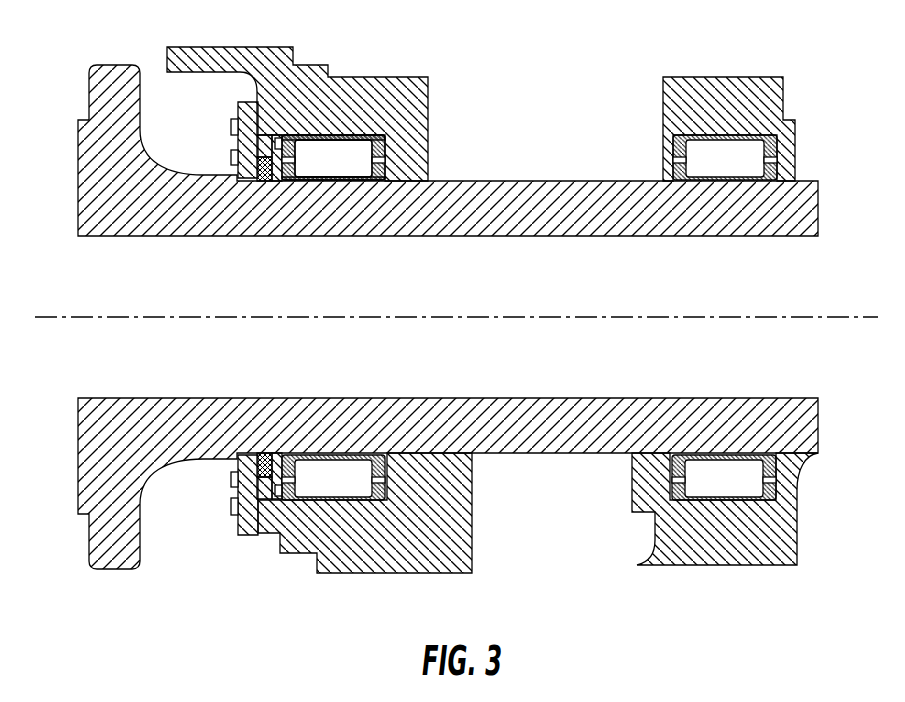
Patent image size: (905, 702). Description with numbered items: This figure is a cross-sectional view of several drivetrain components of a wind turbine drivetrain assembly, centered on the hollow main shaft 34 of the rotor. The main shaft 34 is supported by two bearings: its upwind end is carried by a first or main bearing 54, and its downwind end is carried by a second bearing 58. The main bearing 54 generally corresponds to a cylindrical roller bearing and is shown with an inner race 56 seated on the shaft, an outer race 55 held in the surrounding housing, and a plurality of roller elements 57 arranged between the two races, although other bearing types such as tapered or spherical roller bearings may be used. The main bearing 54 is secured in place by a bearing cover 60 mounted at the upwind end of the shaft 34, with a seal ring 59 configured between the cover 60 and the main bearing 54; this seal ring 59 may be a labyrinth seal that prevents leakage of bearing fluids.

The main shaft 34 is at (78, 213).
The main bearing 54 is at (342, 134).
The outer race 55 is at (385, 136).
The inner race 56 is at (352, 178).
The roller elements 57 is at (315, 163).
The second bearing 58 is at (726, 131).
The seal ring 59 is at (268, 178).
The bearing cover 60 is at (237, 113).